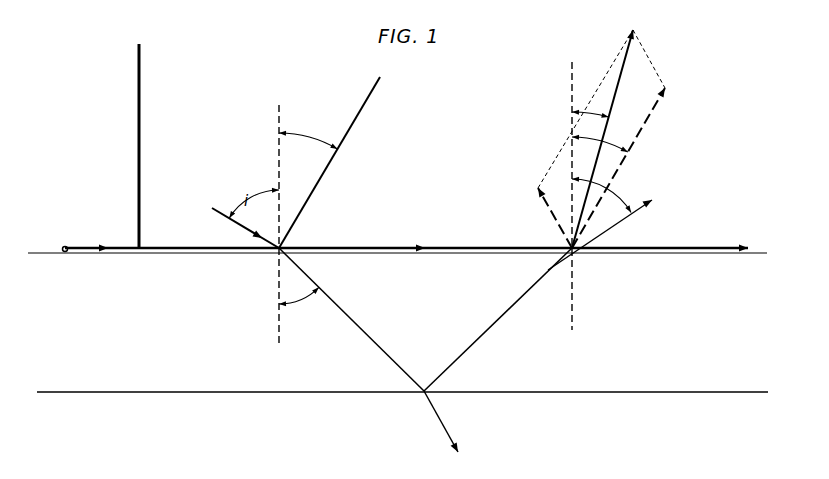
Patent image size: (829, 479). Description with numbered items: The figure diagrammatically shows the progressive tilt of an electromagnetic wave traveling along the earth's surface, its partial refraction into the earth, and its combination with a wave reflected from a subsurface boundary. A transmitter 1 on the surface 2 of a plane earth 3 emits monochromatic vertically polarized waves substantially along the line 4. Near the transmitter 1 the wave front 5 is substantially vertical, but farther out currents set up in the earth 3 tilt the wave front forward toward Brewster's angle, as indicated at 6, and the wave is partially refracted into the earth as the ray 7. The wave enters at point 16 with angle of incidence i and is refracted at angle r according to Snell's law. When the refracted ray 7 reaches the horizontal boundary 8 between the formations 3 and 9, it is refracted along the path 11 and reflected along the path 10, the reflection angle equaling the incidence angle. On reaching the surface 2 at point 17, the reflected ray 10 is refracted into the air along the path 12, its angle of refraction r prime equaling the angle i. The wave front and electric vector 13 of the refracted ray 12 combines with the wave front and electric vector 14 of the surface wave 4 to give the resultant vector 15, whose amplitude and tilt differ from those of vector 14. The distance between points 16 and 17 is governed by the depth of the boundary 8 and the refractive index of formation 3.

The transmitter 1 is at (68, 248).
The surface 2 is at (45, 252).
The plane earth 3 is at (125, 293).
The line 4 is at (168, 250).
The wave front 5 is at (141, 175).
The tilted wave front 6 is at (325, 176).
The refracted ray 7 is at (338, 309).
The horizontal boundary 8 is at (184, 392).
The formation 9 is at (182, 416).
The reflected path 10 is at (489, 327).
The refracted path 11 is at (440, 422).
The refracted ray 12 is at (616, 223).
The wave front of refracted ray 13 is at (548, 207).
The wave front of surface wave 14 is at (646, 124).
The resultant vector 15 is at (614, 103).
The point 16 is at (285, 247).
The point 17 is at (566, 247).